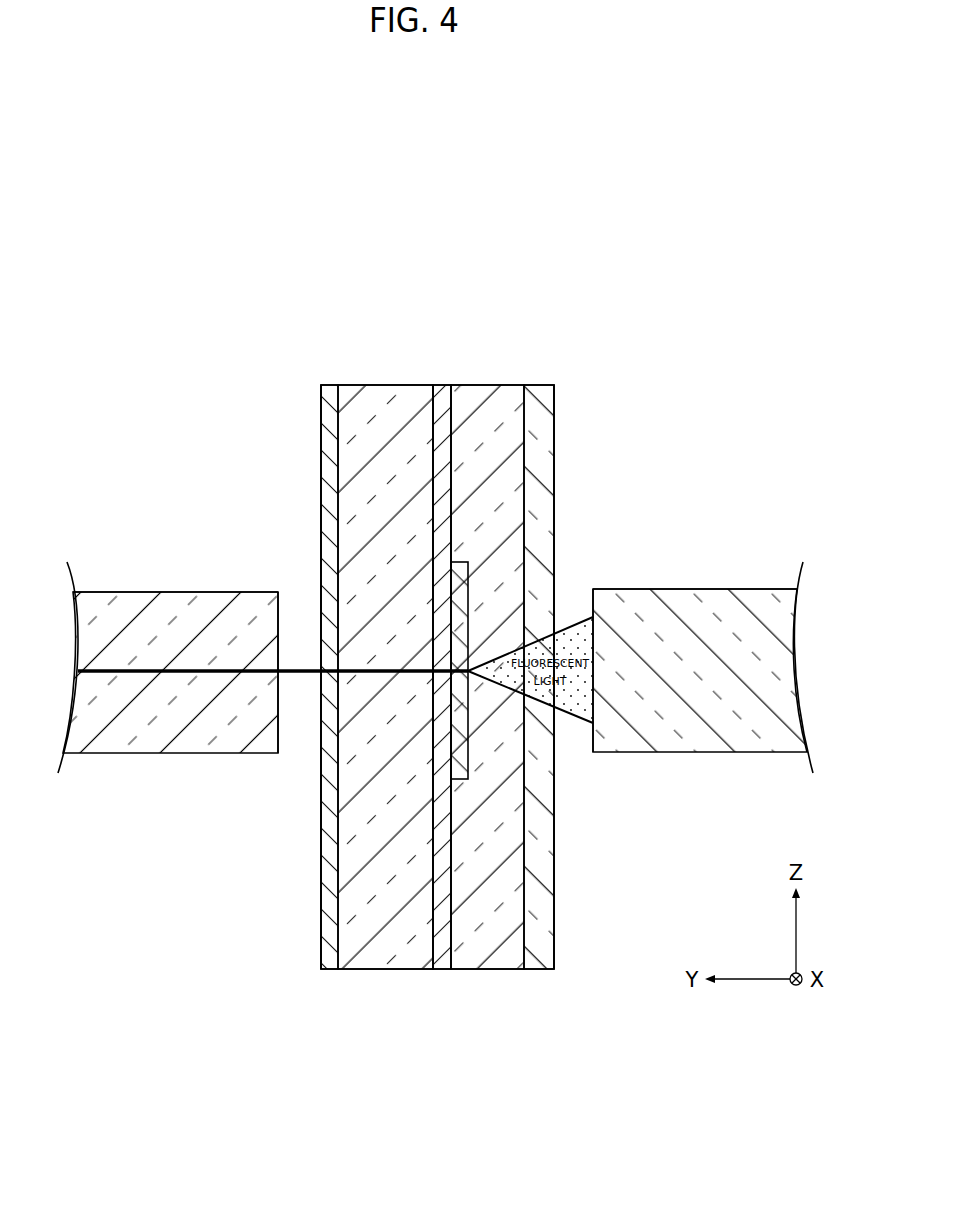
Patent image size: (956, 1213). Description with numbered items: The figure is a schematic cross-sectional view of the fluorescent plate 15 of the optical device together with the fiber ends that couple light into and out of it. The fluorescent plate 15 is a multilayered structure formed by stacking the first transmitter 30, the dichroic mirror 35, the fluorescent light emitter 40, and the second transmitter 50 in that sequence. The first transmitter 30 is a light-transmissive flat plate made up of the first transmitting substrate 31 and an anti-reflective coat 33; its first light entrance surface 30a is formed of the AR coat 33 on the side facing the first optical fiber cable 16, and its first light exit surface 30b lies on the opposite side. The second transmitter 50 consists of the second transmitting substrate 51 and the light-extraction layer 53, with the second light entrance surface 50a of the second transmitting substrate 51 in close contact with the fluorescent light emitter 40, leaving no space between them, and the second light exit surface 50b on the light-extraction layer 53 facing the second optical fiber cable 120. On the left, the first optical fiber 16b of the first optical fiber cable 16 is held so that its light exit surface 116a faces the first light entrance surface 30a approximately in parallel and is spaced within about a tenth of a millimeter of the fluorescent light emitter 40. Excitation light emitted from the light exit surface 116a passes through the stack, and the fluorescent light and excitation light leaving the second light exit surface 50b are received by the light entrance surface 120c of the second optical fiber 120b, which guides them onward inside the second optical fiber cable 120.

The fluorescent plate 15 is at (557, 309).
The first transmitter 30 is at (387, 333).
The anti-reflective (AR) coat 33 is at (330, 385).
The first transmitting substrate 31 is at (375, 385).
The dichroic mirror 35 is at (443, 385).
The second transmitter 50 is at (548, 333).
The second transmitting substrate 51 is at (488, 385).
The light-extraction layer 53 is at (540, 385).
The first light entrance surface 30a is at (322, 969).
The first light exit surface 30b is at (437, 969).
The second light entrance surface 50a is at (465, 569).
The second light exit surface 50b is at (554, 520).
The fluorescent light emitter 40 is at (451, 569).
The first optical fiber cable 16 is at (173, 676).
The first optical fiber 16b is at (148, 592).
The light exit surface 116a is at (278, 740).
The second optical fiber cable 120 is at (697, 675).
The second optical fiber 120b is at (751, 589).
The light entrance surface 120c is at (593, 738).